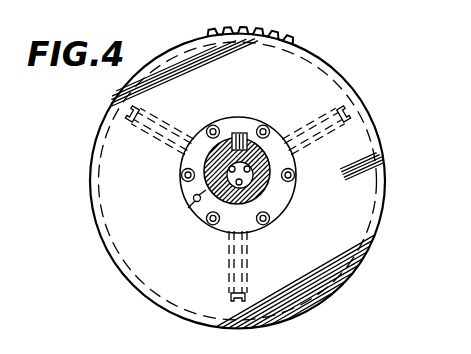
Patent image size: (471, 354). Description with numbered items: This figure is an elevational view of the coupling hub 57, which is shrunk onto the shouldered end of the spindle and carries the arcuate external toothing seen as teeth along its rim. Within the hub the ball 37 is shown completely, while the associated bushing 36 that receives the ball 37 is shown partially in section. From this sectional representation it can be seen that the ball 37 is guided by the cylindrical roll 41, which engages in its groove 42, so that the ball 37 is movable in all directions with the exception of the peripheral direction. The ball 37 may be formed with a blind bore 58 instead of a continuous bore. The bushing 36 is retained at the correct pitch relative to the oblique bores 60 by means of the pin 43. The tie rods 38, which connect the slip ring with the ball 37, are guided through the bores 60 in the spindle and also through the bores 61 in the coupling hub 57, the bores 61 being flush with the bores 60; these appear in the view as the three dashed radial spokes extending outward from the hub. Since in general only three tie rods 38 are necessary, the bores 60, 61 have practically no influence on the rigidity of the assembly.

The bushing 36 is at (221, 131).
The ball 37 is at (227, 173).
The tie rods 38 is at (353, 107).
The cylindrical roll 41 is at (248, 129).
The groove 42 is at (272, 137).
The pin 43 is at (193, 202).
The coupling hub 57 is at (377, 216).
The blind bore 58 is at (296, 191).
The bores 60 is at (252, 229).
The bores 61 is at (313, 146).